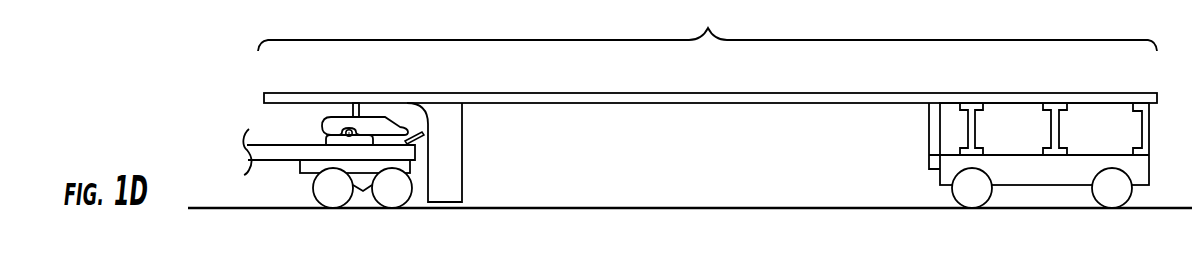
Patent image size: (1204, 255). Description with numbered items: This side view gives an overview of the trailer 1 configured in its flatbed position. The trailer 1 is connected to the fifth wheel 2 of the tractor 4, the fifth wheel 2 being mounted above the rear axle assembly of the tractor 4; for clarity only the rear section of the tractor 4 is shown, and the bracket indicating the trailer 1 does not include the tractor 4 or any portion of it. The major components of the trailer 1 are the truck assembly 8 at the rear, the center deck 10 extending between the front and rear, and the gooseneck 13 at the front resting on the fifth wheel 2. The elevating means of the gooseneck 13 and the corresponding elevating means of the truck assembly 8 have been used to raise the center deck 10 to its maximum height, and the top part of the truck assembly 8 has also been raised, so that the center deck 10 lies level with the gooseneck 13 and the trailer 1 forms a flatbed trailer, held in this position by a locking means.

The trailer 1 is at (707, 25).
The fifth wheel 2 is at (306, 129).
The tractor 4 is at (303, 184).
The truck assembly 8 is at (1067, 74).
The center deck 10 is at (806, 116).
The gooseneck 13 is at (470, 170).